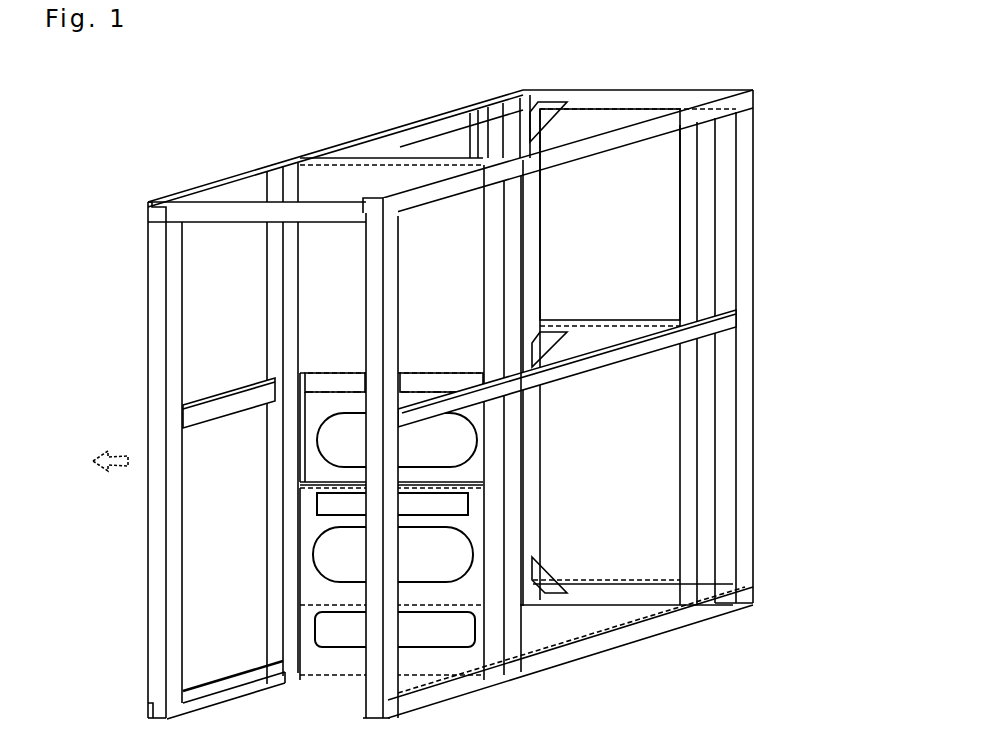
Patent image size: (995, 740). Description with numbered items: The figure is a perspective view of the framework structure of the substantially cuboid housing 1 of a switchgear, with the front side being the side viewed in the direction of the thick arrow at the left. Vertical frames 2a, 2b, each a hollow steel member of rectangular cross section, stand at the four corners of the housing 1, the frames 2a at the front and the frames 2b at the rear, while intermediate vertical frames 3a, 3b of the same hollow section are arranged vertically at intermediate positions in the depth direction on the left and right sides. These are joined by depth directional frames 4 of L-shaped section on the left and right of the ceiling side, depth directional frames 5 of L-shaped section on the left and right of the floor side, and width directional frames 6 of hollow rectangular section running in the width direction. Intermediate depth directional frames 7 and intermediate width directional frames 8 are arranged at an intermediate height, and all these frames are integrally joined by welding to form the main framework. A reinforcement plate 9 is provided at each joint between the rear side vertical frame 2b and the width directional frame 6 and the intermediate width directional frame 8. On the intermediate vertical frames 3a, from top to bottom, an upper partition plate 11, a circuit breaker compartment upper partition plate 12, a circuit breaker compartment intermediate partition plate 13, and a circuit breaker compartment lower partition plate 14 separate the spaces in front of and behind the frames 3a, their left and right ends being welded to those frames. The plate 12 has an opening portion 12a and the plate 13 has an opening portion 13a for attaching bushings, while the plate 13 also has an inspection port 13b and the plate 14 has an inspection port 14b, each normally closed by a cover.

The housing 1 is at (243, 153).
The vertical frame 2a is at (148, 310).
The vertical frame 2b is at (753, 190).
The intermediate vertical frame 3a is at (265, 245).
The intermediate vertical frame 3b is at (477, 133).
The depth directional frame 4 is at (380, 132).
The depth directional frame 5 is at (205, 683).
The width directional frame 6 is at (185, 213).
The intermediate depth directional frame 7 is at (662, 343).
The intermediate width directional frame 8 is at (325, 385).
The reinforcement plate 9 is at (550, 98).
The upper partition plate 11 is at (320, 318).
The circuit breaker compartment upper partition plate 12 is at (316, 462).
The opening portion 12a is at (475, 431).
The circuit breaker compartment intermediate partition plate 13 is at (312, 532).
The opening portion 13a is at (473, 555).
The inspection port 13b is at (468, 503).
The circuit breaker compartment lower partition plate 14 is at (313, 655).
The inspection port 14b is at (500, 645).